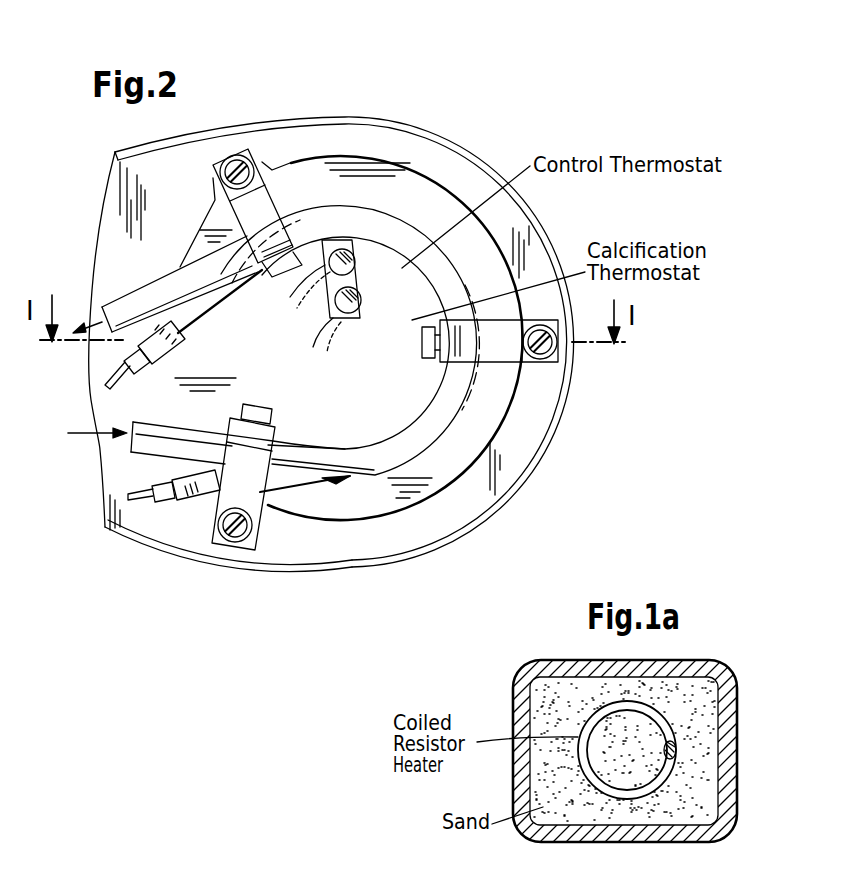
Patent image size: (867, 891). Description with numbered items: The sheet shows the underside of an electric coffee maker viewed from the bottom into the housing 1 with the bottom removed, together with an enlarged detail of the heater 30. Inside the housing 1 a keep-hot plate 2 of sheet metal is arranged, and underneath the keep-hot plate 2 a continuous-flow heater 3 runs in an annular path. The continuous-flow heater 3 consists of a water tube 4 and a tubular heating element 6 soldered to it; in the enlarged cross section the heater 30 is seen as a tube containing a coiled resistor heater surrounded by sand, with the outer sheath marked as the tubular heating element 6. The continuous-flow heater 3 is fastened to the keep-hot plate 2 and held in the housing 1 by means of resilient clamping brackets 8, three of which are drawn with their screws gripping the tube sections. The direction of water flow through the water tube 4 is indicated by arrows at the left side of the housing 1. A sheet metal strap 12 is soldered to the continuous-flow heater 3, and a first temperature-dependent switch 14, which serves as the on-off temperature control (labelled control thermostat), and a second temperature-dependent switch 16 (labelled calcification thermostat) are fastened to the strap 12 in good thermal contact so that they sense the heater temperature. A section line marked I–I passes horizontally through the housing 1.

In FIG. 2, the housing 1 is at (541, 239).
In FIG. 2, the keep-hot plate 2 is at (378, 392).
In FIG. 2, the continuous-flow heater 3 is at (422, 221).
In FIG. 2, the water tube 4 is at (157, 285).
In FIG. 2, the tubular heating element 6 is at (203, 318).
In FIG. 1A, the tubular heating element 6 is at (727, 759).
In FIG. 2, the resilient clamping brackets 8 is at (277, 198).
In FIG. 2, the sheet metal strap 12 is at (344, 240).
In FIG. 2, the first temperature-dependent switch 14 is at (356, 270).
In FIG. 2, the second temperature-dependent switch 16 is at (358, 312).
In FIG. 1A, the heater 30 is at (665, 729).